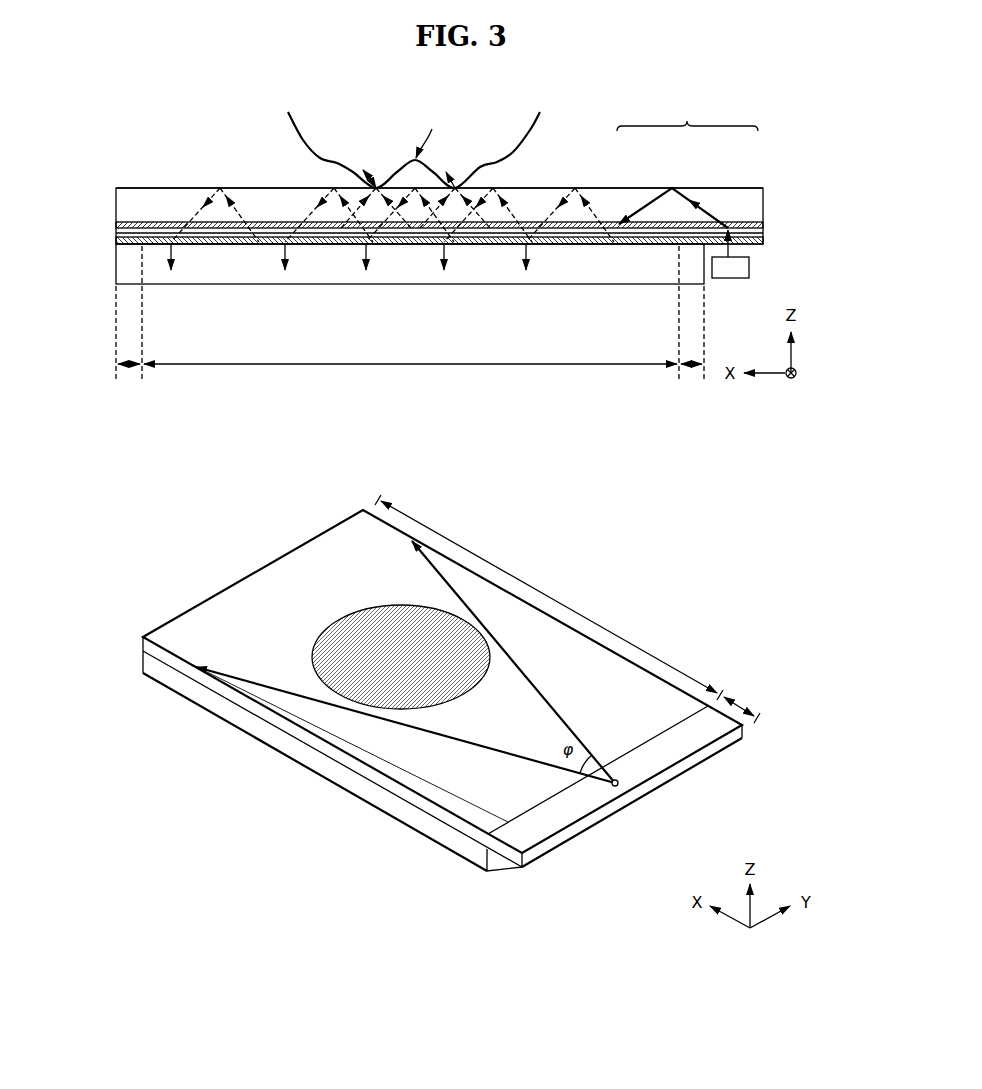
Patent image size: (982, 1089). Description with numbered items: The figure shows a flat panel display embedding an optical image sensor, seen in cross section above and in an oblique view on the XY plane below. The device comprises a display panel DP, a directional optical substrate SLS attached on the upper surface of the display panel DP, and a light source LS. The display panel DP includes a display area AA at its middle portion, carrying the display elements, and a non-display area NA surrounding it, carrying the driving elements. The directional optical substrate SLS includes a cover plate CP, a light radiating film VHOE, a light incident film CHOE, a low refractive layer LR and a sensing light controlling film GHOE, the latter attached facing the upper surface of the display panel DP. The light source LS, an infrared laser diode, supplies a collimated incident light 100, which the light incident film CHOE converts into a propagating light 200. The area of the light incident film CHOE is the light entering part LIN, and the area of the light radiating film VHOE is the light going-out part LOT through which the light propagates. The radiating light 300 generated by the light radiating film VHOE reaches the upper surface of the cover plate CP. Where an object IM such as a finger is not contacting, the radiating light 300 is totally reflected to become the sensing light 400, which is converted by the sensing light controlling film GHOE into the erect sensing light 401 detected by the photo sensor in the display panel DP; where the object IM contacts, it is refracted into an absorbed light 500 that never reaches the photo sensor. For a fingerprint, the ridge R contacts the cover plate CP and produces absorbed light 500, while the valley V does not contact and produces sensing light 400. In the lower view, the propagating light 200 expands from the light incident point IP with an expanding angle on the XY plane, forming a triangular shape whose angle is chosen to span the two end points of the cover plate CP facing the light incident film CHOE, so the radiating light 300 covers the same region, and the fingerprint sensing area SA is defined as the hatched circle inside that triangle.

The incident light 100 is at (707, 262).
The propagating light 200 is at (646, 245).
The radiating light 300 is at (236, 226).
The sensing light 400 is at (208, 200).
The erect sensing light 401 is at (173, 260).
The absorbed light 500 is at (352, 205).
The display panel DP is at (610, 279).
The object IM is at (299, 134).
The ridge R is at (376, 167).
The valley V is at (427, 134).
The sensing light controlling film GHOE is at (553, 210).
The directional optical substrate SLS is at (252, 771).
The cover plate CP is at (615, 200).
The light radiating film VHOE is at (664, 228).
The low refractive layer LR is at (700, 236).
The light incident film CHOE is at (745, 228).
The light source LS is at (750, 268).
The non-display area NA is at (410, 317).
The display area AA is at (410, 376).
The fingerprint sensing area SA is at (345, 622).
The light incident point IP is at (620, 788).
The light going-out part LOT is at (549, 597).
The light entering part LIN is at (751, 704).